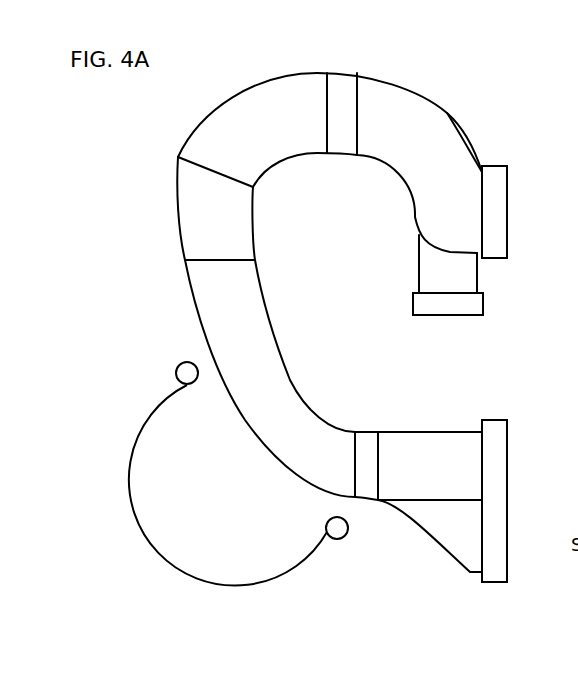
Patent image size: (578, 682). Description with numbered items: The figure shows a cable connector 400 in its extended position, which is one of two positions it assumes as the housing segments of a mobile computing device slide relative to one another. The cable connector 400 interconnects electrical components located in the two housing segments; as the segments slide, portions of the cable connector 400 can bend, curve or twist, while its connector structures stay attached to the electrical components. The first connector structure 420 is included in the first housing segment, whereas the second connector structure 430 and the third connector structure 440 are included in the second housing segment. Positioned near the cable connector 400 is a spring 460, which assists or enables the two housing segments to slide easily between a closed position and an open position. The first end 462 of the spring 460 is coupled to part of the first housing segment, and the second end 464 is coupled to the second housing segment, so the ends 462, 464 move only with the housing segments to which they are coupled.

The cable connector 400 is at (436, 40).
The first connector structure 420 is at (494, 540).
The second connector structure 430 is at (494, 206).
The third connector structure 440 is at (452, 304).
The spring 460 is at (186, 569).
The first end 462 is at (338, 528).
The second end 464 is at (190, 373).